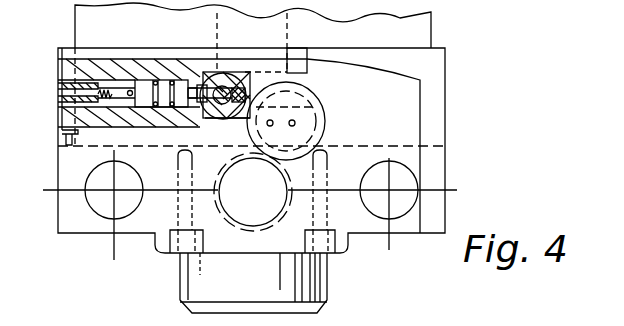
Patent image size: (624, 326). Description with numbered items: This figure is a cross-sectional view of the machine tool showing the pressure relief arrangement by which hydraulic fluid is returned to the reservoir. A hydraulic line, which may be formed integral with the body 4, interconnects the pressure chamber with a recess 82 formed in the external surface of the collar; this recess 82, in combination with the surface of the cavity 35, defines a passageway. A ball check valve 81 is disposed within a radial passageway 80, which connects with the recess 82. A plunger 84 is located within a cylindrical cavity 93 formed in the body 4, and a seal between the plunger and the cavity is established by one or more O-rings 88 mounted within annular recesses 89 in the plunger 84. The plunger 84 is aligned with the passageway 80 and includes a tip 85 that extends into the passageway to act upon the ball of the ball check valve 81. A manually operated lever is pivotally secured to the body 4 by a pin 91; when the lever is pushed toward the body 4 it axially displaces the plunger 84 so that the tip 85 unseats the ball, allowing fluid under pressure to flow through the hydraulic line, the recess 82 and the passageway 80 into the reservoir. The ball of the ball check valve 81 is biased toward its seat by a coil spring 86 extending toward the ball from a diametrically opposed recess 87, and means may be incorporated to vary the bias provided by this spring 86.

The body 4 is at (92, 240).
The pin 91 is at (68, 52).
The cylindrical cavity 93 is at (117, 78).
The annular recesses 89 is at (134, 82).
The O-rings 88 is at (160, 80).
The plunger 84 is at (147, 110).
The tip 85 is at (204, 122).
The cavity 35 is at (210, 72).
The radial passageway 80 is at (252, 76).
The ball check valve 81 is at (244, 116).
The coil spring 86 is at (250, 76).
The recess 87 is at (305, 86).
The recess 82 is at (222, 125).